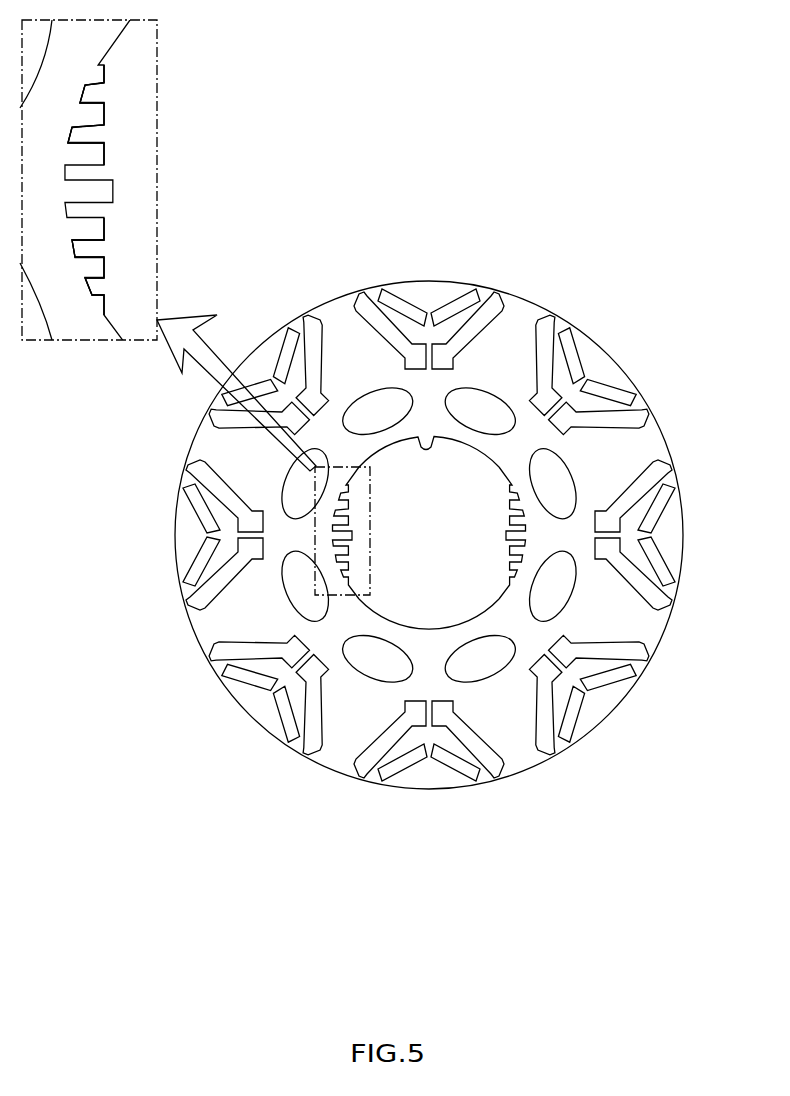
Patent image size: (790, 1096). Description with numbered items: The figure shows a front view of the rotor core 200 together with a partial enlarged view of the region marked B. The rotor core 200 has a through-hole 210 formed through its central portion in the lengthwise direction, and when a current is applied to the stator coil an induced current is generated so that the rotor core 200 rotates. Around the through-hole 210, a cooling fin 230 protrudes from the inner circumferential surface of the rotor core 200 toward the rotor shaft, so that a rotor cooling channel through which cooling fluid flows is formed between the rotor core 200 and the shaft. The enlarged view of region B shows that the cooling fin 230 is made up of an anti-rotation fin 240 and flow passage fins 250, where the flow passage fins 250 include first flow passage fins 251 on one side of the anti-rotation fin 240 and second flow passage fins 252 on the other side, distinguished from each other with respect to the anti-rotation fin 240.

The rotor core 200 is at (523, 318).
The through-hole 210 is at (425, 448).
The cooling fin 230 is at (737, 587).
The anti-rotation fin 240 is at (112, 190).
The flow passage fins 250 is at (313, 41).
The first flow passage fins 251 is at (103, 78).
The second flow passage fins 252 is at (103, 228).
The detail region B is at (335, 531).